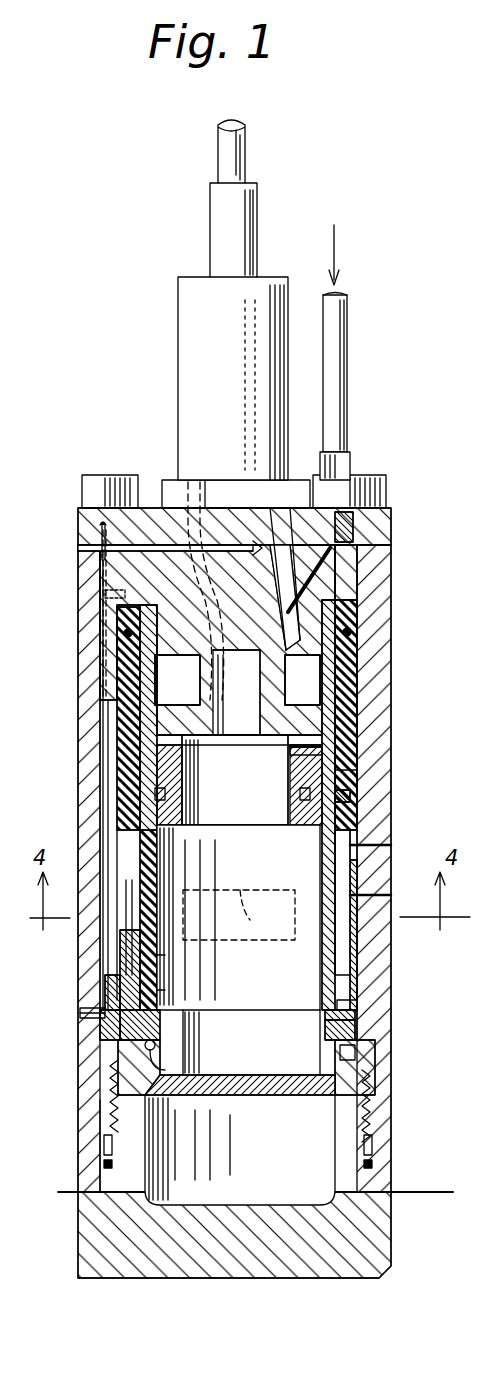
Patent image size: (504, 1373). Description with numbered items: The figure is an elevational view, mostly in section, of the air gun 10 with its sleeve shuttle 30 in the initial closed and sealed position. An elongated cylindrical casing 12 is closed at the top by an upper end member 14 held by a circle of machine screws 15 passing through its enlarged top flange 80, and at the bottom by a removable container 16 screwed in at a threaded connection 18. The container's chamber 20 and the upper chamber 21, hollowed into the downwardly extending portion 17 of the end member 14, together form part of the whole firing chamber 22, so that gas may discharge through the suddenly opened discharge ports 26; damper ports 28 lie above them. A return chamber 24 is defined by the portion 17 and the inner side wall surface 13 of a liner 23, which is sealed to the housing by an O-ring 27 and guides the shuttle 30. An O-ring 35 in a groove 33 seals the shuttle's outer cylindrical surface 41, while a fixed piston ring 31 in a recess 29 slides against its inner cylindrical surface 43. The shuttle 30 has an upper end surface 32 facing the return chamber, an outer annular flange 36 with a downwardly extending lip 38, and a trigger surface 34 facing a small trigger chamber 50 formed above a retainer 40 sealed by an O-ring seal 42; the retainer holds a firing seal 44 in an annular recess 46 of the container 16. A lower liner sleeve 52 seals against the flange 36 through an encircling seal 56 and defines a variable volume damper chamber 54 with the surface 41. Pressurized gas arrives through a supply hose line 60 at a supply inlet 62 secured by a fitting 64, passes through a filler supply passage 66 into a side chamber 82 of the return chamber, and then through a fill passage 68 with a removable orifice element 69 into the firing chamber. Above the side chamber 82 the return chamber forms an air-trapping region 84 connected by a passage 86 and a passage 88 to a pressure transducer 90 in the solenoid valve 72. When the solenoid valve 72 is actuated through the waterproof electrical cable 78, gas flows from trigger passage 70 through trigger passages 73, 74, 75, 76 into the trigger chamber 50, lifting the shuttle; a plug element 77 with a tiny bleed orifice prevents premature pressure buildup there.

The air gun 10 is at (470, 444).
The cylindrical housing or casing 12 is at (380, 720).
The inner cylindrical side wall surface 13 is at (150, 670).
The upper end member 14 is at (148, 508).
The machine screws 15 is at (95, 475).
The removable and replaceable container 16 is at (370, 1245).
The downwardly extending portion 17 is at (165, 745).
The threaded connection 18 is at (370, 1110).
The chamber 20 is at (272, 1154).
The upper chamber 21 is at (272, 766).
The firing chamber 22 is at (317, 979).
The liner 23 is at (355, 665).
The return chamber 24 is at (355, 690).
The discharge ports 26 is at (423, 955).
The O-ring 27 is at (350, 632).
The damper ports 28 is at (385, 852).
The recess 29 is at (160, 795).
The sleeve shuttle 30 is at (150, 840).
The inner fixed piston ring 31 is at (165, 790).
The upper end surface 32 is at (315, 752).
The groove 33 is at (345, 800).
The trigger surface 34 is at (340, 1020).
The O-ring 35 is at (340, 785).
The outer annular flange 36 is at (345, 1000).
The downwardly extending lip 38 is at (325, 1025).
The retainer 40 is at (360, 1055).
The outer cylindrical surface 41 is at (115, 905).
The O-ring seal 42 is at (350, 1045).
The inner cylindrical surface 43 is at (160, 955).
The firing seal 44 is at (150, 1030).
The annular recess 46 is at (170, 1060).
The trigger chamber 50 is at (160, 990).
The cylindrical liner sleeve 52 is at (112, 955).
The variable volume damper chamber 54 is at (130, 930).
The encircling seal 56 is at (85, 1020).
The high pressure supply hose line 60 is at (350, 360).
The high pressure supply inlet 62 is at (355, 530).
The fitting 64 is at (340, 470).
The filler supply passage 66 is at (330, 560).
The fill passage 68 is at (235, 780).
The removable orifice element 69 is at (330, 745).
The trigger passage 70 is at (275, 508).
The solenoid valve 72 is at (178, 345).
The trigger passage 73 is at (205, 508).
The trigger passage 74 is at (105, 528).
The trigger passage 75 is at (108, 715).
The trigger passage 76 is at (85, 1040).
The plug element 77 is at (110, 1010).
The waterproof electrical cable 78 is at (225, 145).
The top portion or flange 80 is at (391, 545).
The annular recess or side chamber 82 is at (320, 684).
The air-trapping region 84 is at (120, 615).
The passage 86 is at (177, 680).
The passage 88 is at (190, 400).
The pressure transducer 90 is at (185, 303).